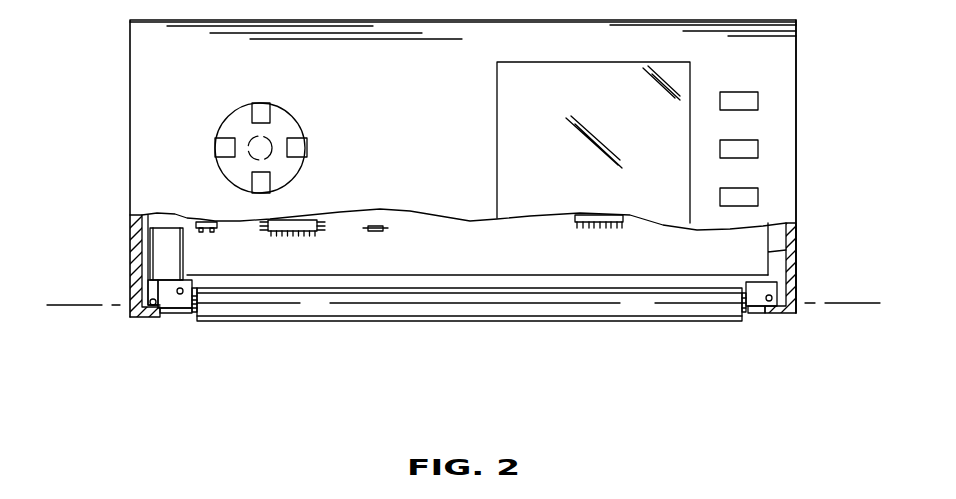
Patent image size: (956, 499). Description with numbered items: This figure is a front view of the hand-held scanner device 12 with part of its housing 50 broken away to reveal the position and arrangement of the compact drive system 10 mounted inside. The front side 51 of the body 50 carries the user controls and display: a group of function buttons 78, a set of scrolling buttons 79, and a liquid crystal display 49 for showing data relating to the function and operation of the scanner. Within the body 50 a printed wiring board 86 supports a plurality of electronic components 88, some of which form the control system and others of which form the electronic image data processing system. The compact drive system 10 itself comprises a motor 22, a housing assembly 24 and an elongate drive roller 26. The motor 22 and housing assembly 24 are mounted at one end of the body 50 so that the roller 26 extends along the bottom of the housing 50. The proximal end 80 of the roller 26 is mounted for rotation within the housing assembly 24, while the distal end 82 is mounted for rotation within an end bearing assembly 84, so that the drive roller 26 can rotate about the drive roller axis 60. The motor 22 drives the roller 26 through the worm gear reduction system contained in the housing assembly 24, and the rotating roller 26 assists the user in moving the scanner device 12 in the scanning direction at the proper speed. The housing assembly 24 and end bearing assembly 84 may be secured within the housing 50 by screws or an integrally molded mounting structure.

The compact drive system 10 is at (98, 240).
The hand-held scanner device 12 is at (122, 118).
The motor 22 is at (188, 252).
The housing assembly 24 is at (172, 330).
The drive roller 26 is at (530, 327).
The liquid crystal display 49 is at (497, 88).
The housing 50 is at (796, 57).
The front side 51 is at (414, 147).
The roller axis 60 is at (82, 306).
The function buttons 78 is at (820, 147).
The scrolling buttons 79 is at (275, 116).
The proximal end 80 is at (200, 322).
The distal end 82 is at (723, 322).
The end bearing assembly 84 is at (757, 314).
The printed wiring board 86 is at (786, 247).
The electronic components 88 is at (380, 232).